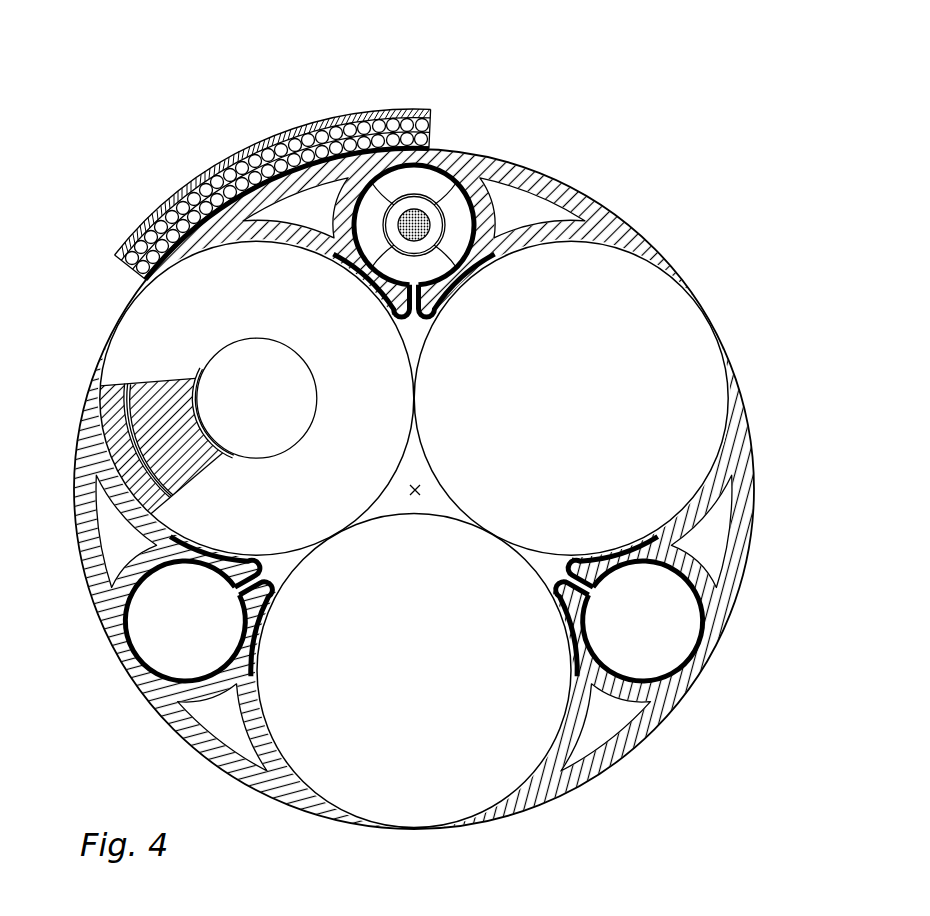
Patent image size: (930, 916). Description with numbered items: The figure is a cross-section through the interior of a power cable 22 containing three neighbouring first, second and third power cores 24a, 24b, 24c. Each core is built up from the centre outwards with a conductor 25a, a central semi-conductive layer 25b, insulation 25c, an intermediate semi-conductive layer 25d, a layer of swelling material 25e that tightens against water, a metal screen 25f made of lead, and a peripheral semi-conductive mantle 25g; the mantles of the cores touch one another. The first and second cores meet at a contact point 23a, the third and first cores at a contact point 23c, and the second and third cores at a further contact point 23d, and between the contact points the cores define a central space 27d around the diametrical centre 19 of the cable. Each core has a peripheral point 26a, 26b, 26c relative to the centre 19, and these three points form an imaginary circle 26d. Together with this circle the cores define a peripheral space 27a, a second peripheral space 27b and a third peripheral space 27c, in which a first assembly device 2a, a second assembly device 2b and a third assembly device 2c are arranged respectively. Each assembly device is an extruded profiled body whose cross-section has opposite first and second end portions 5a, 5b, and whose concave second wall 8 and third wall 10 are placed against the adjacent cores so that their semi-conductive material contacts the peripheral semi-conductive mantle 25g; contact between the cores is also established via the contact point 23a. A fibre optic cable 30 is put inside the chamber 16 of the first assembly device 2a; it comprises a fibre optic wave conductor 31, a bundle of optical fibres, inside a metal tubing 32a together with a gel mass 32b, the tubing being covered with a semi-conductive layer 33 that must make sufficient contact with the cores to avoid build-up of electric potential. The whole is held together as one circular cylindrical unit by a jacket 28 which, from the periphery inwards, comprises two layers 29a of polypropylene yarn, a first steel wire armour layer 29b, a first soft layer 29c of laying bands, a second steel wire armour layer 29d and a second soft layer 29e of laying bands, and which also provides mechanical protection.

The first assembly device 2a is at (488, 162).
The second assembly device 2b is at (755, 526).
The third assembly device 2c is at (120, 662).
The first end portion 5a is at (183, 250).
The second end portion 5b is at (640, 250).
The second wall 8 is at (283, 242).
The third wall 10 is at (553, 243).
The chamber 16 is at (428, 197).
The diametrical centre 19 is at (425, 487).
The power cable 22 is at (287, 101).
The contact point 23a is at (418, 393).
The contact point 23c is at (336, 536).
The contact point 23d is at (492, 531).
The first power core 24a is at (148, 350).
The second power core 24b is at (720, 354).
The third power core 24c is at (478, 814).
The conductor 25a is at (282, 416).
The central semi-conductive layer 25b is at (222, 456).
The insulation 25c is at (193, 466).
The intermediate semi-conductive layer 25d is at (160, 426).
The layer of swelling material 25e is at (180, 496).
The metal screen 25f is at (160, 505).
The peripheral semi-conductive mantle 25g is at (128, 383).
The peripheral point 26a is at (115, 312).
The peripheral point 26b is at (708, 318).
The peripheral point 26c is at (416, 830).
The imaginary circle 26d is at (742, 398).
The peripheral space 27a is at (416, 334).
The second peripheral space 27b is at (548, 562).
The third peripheral space 27c is at (278, 583).
The central space 27d is at (420, 510).
The jacket 28 is at (225, 203).
The layers of yarn 29a is at (118, 257).
The first steel wire armour layer 29b is at (128, 266).
The first soft layer 29c is at (140, 275).
The second steel wire armour layer 29d is at (146, 280).
The second soft layer 29e is at (151, 284).
The fibre optic cable 30 is at (377, 272).
The fibre optic wave conductor 31 is at (430, 224).
The metal tubing 32a is at (447, 242).
The mass 32b is at (397, 224).
The semi-conductive layer 33 is at (463, 185).